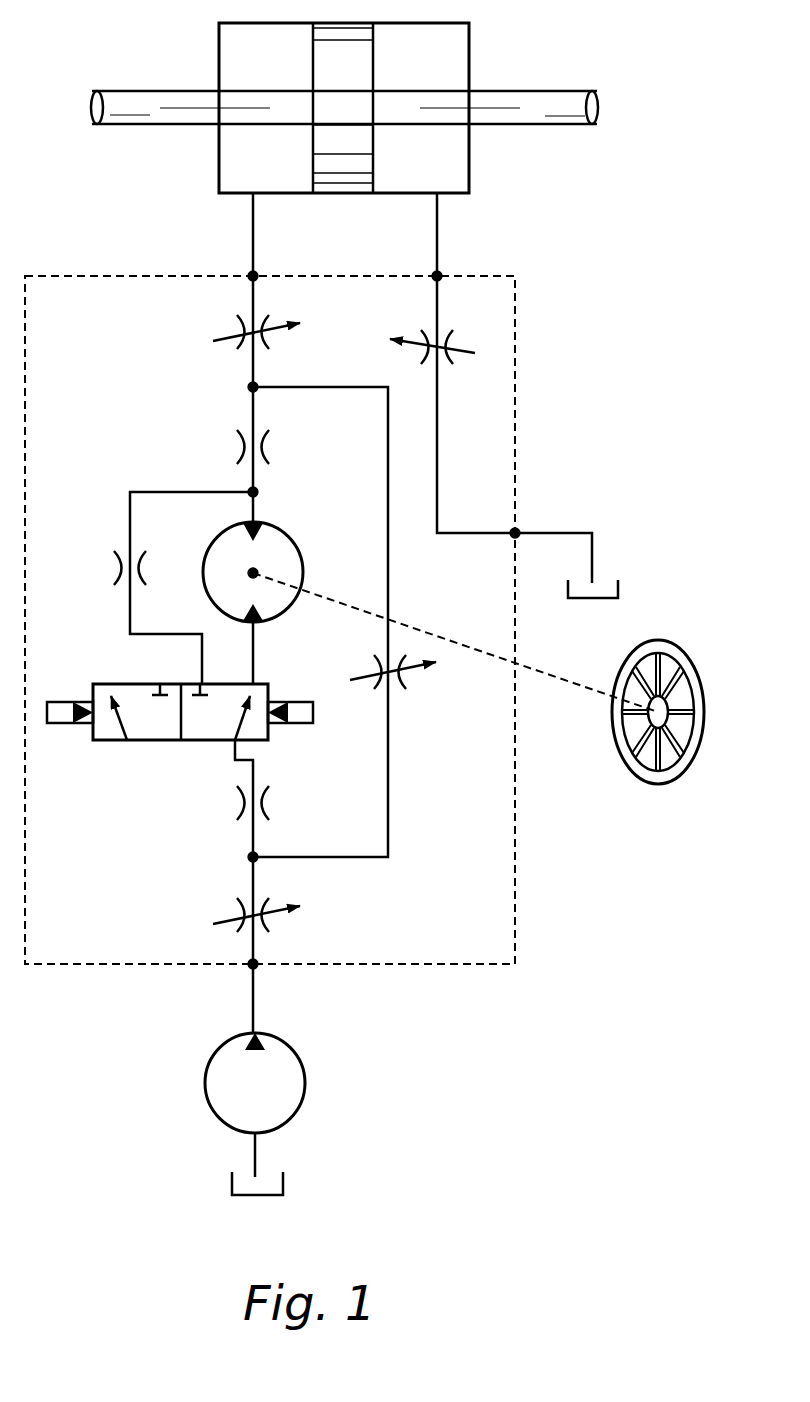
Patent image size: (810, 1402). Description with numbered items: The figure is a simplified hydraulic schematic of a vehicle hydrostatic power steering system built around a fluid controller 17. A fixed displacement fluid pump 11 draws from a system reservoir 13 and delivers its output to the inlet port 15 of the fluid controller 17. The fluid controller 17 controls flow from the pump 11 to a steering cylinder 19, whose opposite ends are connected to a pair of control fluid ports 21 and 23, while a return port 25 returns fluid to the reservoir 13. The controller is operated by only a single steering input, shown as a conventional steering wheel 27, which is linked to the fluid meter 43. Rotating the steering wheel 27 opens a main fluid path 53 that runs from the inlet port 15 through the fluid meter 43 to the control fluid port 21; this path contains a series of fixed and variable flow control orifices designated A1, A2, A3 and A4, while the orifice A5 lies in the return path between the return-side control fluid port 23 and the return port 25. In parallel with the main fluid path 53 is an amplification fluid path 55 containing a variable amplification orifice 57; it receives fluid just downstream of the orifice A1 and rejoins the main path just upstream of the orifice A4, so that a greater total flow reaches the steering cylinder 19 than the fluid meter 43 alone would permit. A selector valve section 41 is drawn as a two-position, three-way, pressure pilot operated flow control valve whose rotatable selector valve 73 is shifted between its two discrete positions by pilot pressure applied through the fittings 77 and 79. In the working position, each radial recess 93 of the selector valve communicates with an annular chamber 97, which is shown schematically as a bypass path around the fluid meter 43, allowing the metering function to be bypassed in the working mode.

The fluid pump 11 is at (307, 1098).
The system reservoir 13 is at (232, 1180).
The inlet port 15 is at (250, 966).
The fluid controller 17 is at (552, 318).
The steering cylinder 19 is at (219, 60).
The control fluid port 21 is at (252, 275).
The control fluid port 23 is at (438, 276).
The return port 25 is at (518, 530).
The steering wheel 27 is at (637, 772).
The selector valve section 41 is at (88, 664).
The fluid meter 43 is at (305, 540).
The main fluid path 53 is at (243, 414).
The amplification fluid path 55 is at (390, 783).
The variable amplification orifice 57 is at (400, 692).
The selector valve 73 is at (150, 740).
The fitting 77 is at (70, 723).
The fitting 79 is at (291, 702).
The radial recess 93 is at (117, 565).
The annular chamber 97 is at (130, 505).
The flow control orifice A1 is at (238, 908).
The flow control orifice A2 is at (240, 805).
The flow control orifice A3 is at (245, 462).
The flow control orifice A4 is at (237, 326).
The flow control orifice A5 is at (425, 352).